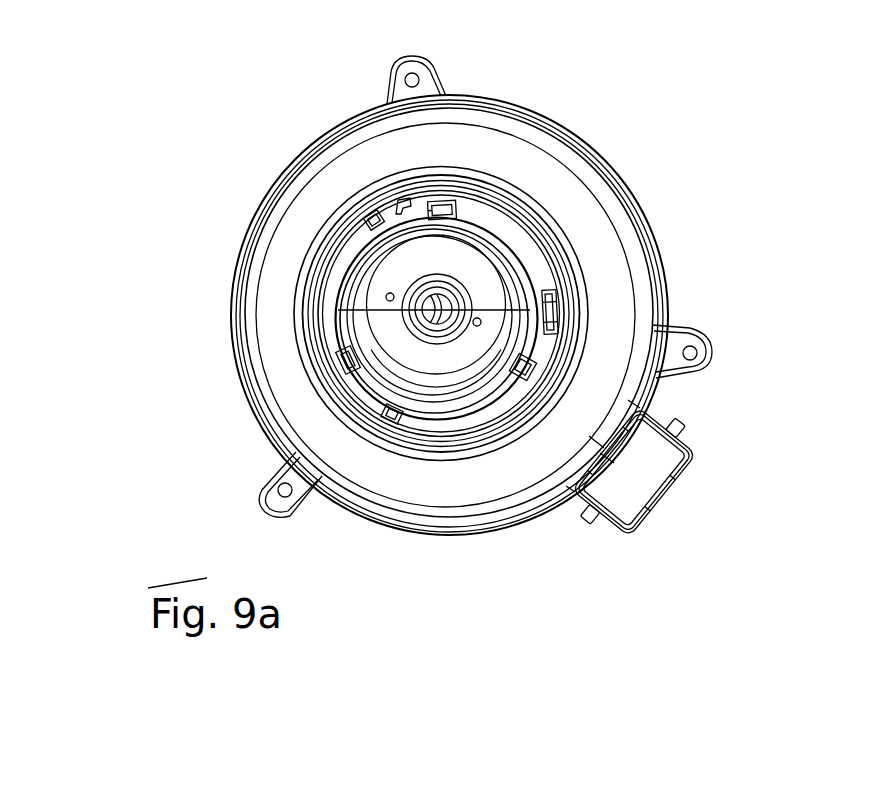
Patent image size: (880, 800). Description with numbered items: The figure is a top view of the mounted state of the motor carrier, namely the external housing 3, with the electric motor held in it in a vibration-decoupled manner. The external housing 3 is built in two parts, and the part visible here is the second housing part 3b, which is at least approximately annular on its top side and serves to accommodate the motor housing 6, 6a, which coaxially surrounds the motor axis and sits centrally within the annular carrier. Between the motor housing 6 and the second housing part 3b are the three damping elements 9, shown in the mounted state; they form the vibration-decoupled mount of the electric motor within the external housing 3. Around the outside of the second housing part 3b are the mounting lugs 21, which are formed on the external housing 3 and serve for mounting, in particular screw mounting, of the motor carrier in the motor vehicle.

The external housing 3 is at (507, 315).
The second housing part 3b is at (613, 248).
The motor housing 6 is at (282, 354).
The rotor hub 6a is at (393, 355).
The damping elements 9 is at (393, 187).
The mounting lugs 21 is at (390, 77).